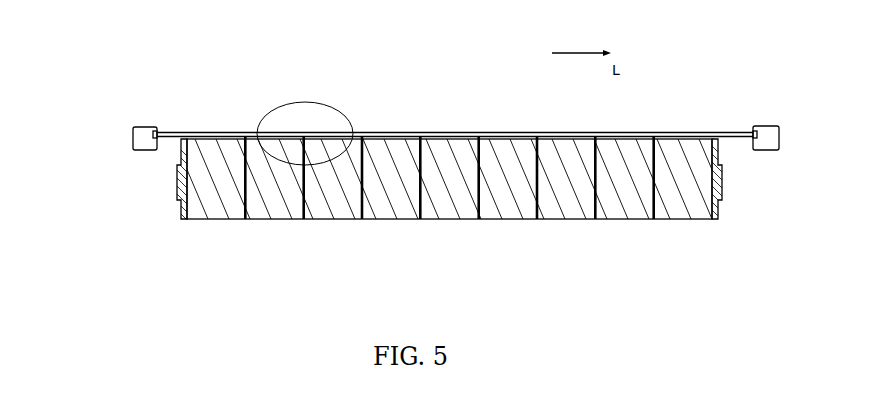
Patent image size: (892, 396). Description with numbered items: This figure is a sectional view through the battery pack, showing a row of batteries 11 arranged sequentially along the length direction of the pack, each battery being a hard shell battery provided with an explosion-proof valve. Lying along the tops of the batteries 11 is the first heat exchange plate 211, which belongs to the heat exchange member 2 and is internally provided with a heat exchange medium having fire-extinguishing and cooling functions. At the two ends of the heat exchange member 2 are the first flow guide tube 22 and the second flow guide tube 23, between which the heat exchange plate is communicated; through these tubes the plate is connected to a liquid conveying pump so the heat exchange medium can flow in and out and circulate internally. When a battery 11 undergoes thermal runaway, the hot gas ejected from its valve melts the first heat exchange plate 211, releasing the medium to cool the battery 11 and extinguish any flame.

The heat exchange member 2 is at (107, 99).
The first heat exchange plate 211 is at (175, 133).
The first flow guide tube 22 is at (132, 137).
The second flow guide tube 23 is at (779, 148).
The battery 11 is at (267, 198).